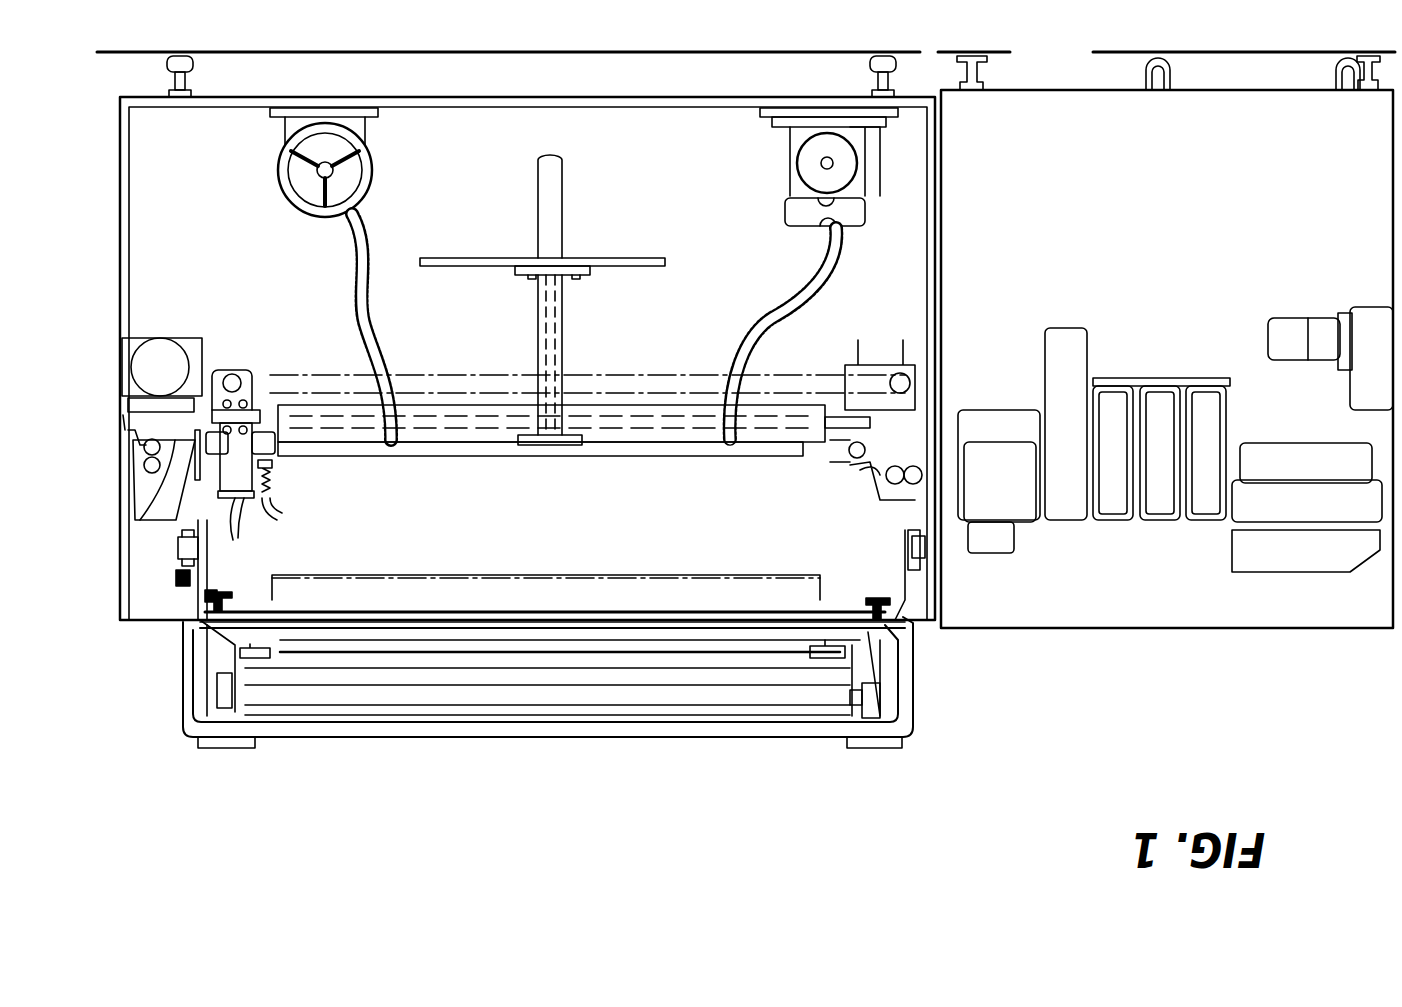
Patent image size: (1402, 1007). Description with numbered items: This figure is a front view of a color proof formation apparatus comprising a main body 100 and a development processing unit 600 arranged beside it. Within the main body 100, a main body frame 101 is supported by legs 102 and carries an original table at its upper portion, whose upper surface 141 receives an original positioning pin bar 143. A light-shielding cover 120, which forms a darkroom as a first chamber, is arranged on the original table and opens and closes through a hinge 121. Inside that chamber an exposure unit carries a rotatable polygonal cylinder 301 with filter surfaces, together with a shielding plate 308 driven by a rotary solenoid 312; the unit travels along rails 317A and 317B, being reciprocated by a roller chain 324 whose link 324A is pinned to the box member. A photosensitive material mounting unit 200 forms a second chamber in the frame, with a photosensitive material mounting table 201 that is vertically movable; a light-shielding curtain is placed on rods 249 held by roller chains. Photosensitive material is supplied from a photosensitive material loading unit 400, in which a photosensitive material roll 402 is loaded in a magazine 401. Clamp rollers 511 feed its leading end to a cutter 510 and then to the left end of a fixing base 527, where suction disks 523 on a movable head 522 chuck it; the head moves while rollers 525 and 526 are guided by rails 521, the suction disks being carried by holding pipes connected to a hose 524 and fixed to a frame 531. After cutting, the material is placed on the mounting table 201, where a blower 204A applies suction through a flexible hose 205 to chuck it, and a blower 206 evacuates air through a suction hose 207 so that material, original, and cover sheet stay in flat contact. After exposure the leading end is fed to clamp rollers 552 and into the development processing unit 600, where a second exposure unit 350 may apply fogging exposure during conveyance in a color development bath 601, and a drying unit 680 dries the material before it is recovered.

The main body 100 is at (109, 256).
The main body frame 101 is at (119, 193).
The legs 102 is at (171, 78).
The light-shielding cover 120 is at (748, 755).
The hinge 121 is at (213, 753).
The upper surface 141 is at (815, 648).
The original positioning pin bar 143 is at (530, 632).
The photosensitive material mounting unit 200 is at (503, 471).
The photosensitive material mounting table 201 is at (705, 460).
The blower 204A is at (287, 208).
The flexible hose 205 is at (344, 286).
The blower 206 is at (797, 170).
The suction hose 207 is at (785, 302).
The rods 249 is at (557, 610).
The polygonal cylinder 301 is at (437, 712).
The shielding plate 308 is at (357, 654).
The rotary solenoid 312 is at (820, 656).
The rail 317A is at (178, 585).
The rail 317B is at (940, 557).
The roller chain 324 is at (182, 565).
The link 324A is at (205, 612).
The second exposure unit 350 is at (1006, 564).
The photosensitive material loading unit 400 is at (106, 455).
The magazine 401 is at (119, 371).
The photosensitive material roll 402 is at (119, 404).
The cutter 510 is at (185, 478).
The clamp rollers 511 is at (148, 470).
The rails 521 is at (836, 410).
The movable head 522 is at (247, 440).
The suction disks 523 is at (262, 498).
The hose 524 is at (272, 520).
The roller 525 is at (228, 520).
The roller 526 is at (212, 368).
The fixing base 527 is at (265, 450).
The frame 531 is at (238, 497).
The clamp rollers 552 is at (848, 482).
The development processing unit 600 is at (1183, 643).
The color development bath 601 is at (1067, 520).
The drying unit 680 is at (1300, 560).